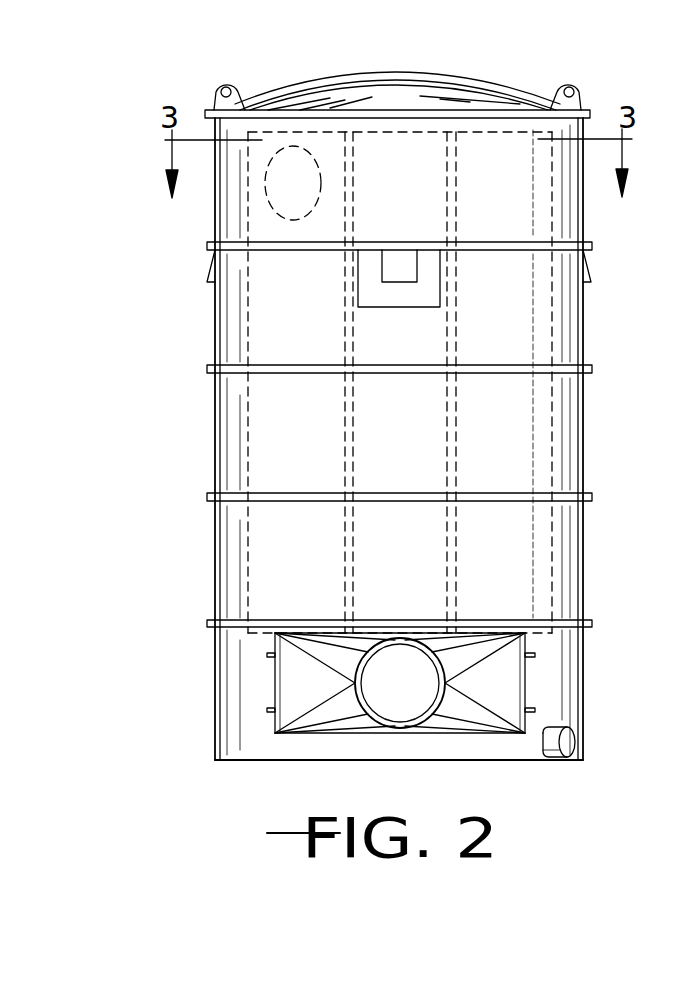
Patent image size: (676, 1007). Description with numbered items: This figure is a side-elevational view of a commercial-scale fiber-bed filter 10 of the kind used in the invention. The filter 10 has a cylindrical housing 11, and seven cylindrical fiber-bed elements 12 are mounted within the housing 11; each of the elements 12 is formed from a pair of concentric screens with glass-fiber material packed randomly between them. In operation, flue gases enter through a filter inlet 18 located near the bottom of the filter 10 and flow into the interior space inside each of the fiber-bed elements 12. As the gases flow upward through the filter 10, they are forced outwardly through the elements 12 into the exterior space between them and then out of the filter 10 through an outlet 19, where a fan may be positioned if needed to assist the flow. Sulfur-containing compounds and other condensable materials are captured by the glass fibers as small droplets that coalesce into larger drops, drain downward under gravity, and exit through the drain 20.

The fiber-bed filter 10 is at (105, 212).
The cylindrical housing 11 is at (215, 403).
The fiber-bed elements 12 is at (248, 318).
The filter inlet 18 is at (385, 688).
The outlet 19 is at (304, 145).
The drain 20 is at (570, 737).